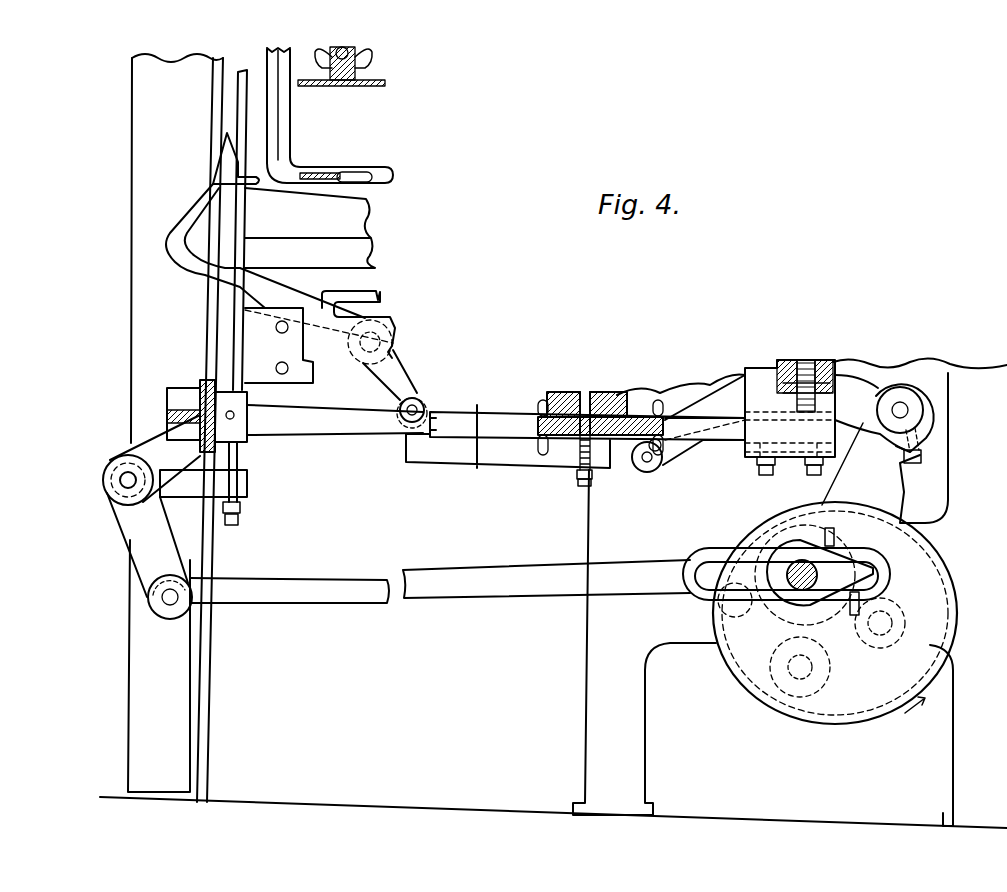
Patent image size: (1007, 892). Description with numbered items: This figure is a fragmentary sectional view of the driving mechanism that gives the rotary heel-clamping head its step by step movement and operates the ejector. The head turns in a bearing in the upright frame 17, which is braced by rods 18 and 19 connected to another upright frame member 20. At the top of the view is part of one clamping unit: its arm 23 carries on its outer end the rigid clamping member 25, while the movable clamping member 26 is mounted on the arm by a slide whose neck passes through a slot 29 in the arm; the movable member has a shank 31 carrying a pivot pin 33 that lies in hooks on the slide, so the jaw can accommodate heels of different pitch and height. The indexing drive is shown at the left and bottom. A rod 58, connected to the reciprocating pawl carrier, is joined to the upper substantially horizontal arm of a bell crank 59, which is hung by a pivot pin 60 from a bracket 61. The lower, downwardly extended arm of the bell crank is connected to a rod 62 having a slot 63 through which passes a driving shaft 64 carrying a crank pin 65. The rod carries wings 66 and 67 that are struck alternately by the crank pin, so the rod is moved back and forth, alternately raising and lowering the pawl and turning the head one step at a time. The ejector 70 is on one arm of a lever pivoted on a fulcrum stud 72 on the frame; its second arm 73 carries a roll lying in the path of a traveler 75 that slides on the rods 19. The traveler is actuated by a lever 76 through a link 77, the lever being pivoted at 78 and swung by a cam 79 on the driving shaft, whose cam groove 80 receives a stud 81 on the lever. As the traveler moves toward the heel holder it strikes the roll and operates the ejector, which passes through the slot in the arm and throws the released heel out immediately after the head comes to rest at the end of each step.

The upright frame 17 is at (150, 690).
The rods 18 is at (357, 252).
The rods 19 is at (438, 432).
The upright frame member 20 is at (600, 711).
The arm 23 is at (272, 58).
The rigid clamping member 25 is at (378, 165).
The movable clamping member 26 is at (365, 88).
The slot 29 is at (285, 124).
The shank 31 is at (357, 72).
The pivot pin 33 is at (370, 56).
The rod 58 is at (237, 345).
The bell crank 59 is at (248, 493).
The pivot pin 60 is at (118, 480).
The bracket 61 is at (150, 440).
The rod 62 is at (399, 570).
The slot 63 is at (713, 565).
The driving shaft 64 is at (813, 600).
The crank pin 65 is at (865, 568).
The wing 66 is at (832, 528).
The wing 67 is at (838, 676).
The ejector 70 is at (205, 192).
The fulcrum stud 72 is at (393, 344).
The second arm 73 is at (420, 402).
The traveler 75 is at (560, 468).
The lever 76 is at (900, 495).
The link 77 is at (703, 445).
The pivot 78 is at (782, 702).
The cam 79 is at (935, 690).
The cam groove 80 is at (890, 712).
The stud 81 is at (715, 622).